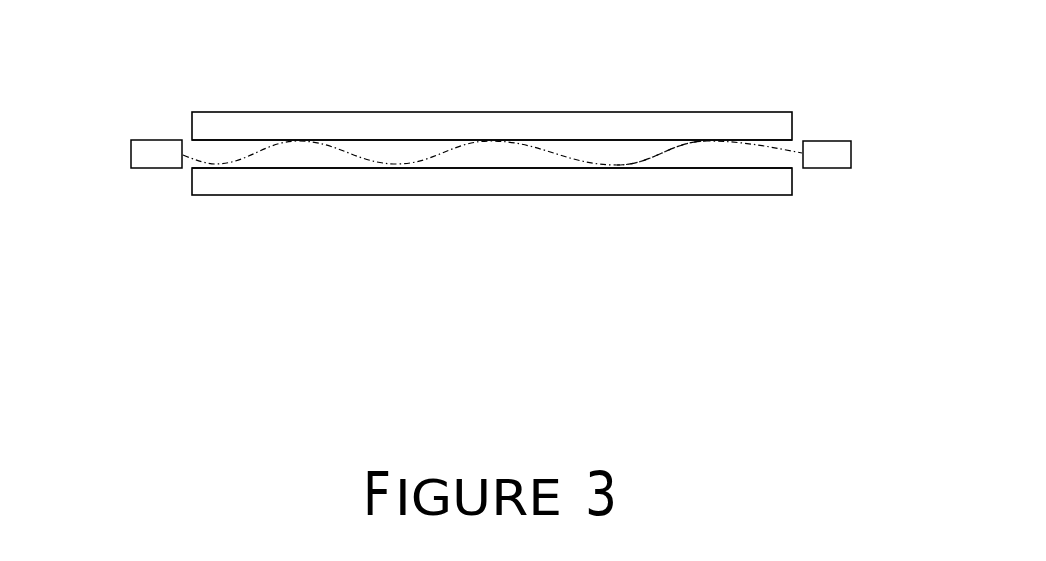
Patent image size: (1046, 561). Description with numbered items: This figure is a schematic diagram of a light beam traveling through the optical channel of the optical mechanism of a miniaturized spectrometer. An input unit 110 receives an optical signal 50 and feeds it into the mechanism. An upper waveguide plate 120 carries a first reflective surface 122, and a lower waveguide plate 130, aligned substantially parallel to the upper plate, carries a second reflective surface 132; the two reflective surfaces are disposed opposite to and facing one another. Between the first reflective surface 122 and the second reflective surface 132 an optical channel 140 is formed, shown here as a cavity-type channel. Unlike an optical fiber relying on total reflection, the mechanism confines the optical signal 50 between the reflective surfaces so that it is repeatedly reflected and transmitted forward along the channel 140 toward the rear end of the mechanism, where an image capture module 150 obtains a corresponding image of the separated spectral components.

The optical signal 50 is at (660, 154).
The input unit 110 is at (851, 153).
The upper waveguide plate 120 is at (530, 112).
The first reflective surface 122 is at (359, 126).
The lower waveguide plate 130 is at (699, 195).
The second reflective surface 132 is at (346, 180).
The optical channel 140 is at (501, 176).
The image capture module 150 is at (140, 153).